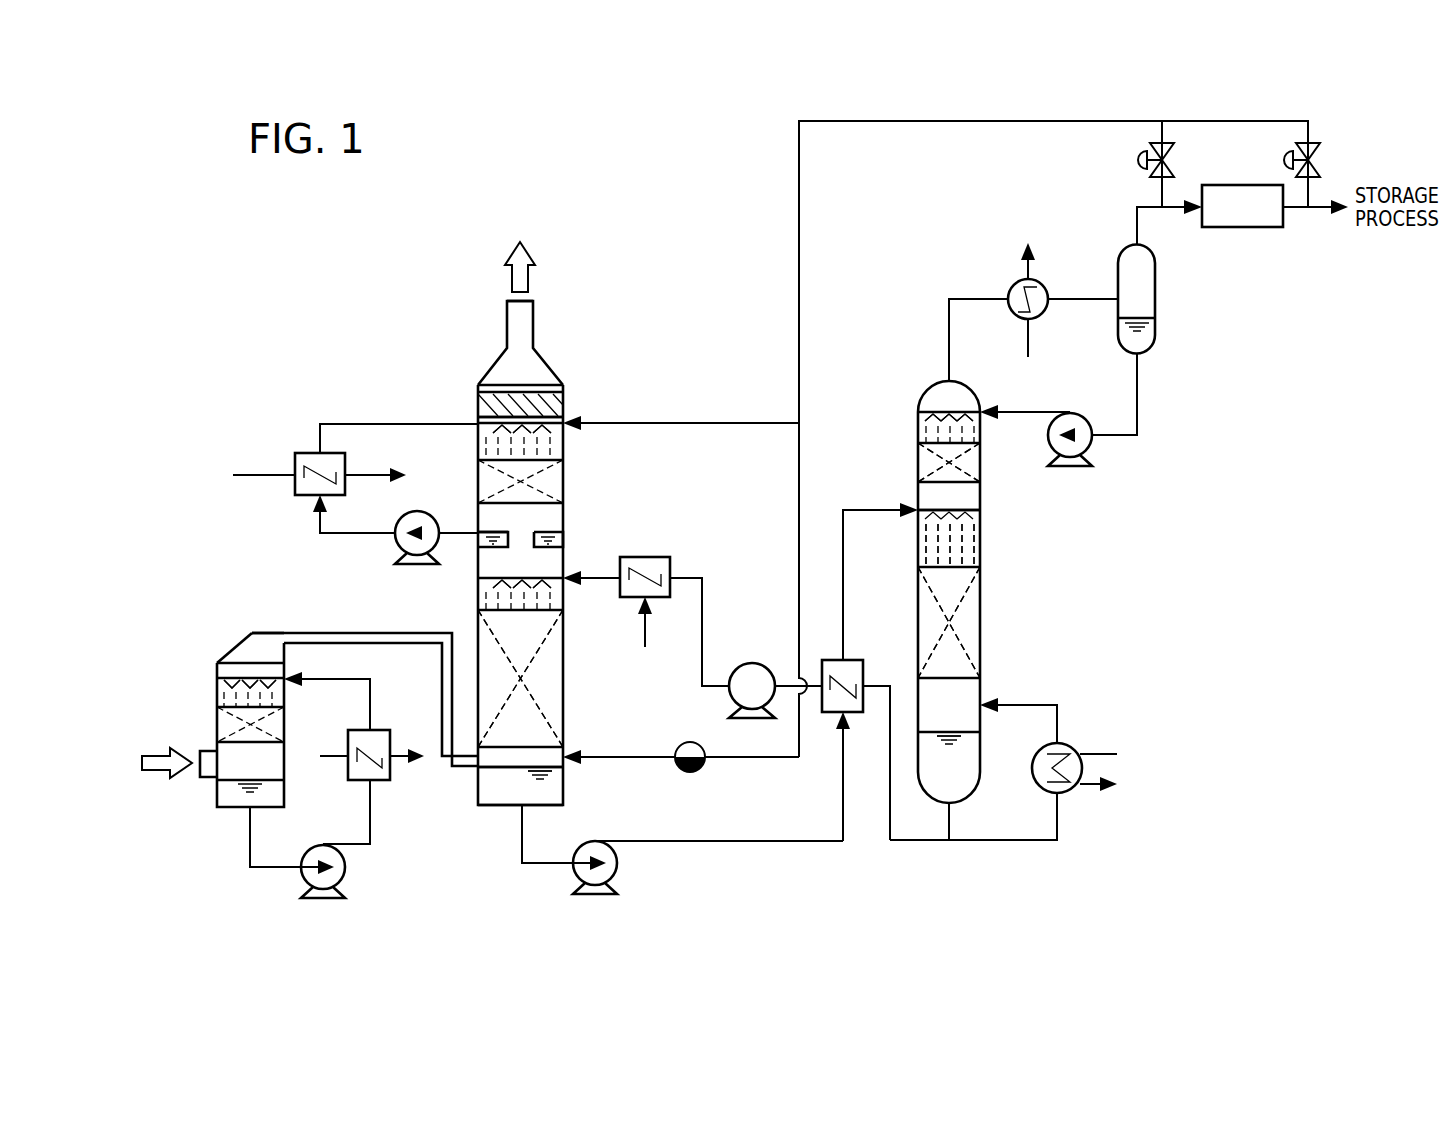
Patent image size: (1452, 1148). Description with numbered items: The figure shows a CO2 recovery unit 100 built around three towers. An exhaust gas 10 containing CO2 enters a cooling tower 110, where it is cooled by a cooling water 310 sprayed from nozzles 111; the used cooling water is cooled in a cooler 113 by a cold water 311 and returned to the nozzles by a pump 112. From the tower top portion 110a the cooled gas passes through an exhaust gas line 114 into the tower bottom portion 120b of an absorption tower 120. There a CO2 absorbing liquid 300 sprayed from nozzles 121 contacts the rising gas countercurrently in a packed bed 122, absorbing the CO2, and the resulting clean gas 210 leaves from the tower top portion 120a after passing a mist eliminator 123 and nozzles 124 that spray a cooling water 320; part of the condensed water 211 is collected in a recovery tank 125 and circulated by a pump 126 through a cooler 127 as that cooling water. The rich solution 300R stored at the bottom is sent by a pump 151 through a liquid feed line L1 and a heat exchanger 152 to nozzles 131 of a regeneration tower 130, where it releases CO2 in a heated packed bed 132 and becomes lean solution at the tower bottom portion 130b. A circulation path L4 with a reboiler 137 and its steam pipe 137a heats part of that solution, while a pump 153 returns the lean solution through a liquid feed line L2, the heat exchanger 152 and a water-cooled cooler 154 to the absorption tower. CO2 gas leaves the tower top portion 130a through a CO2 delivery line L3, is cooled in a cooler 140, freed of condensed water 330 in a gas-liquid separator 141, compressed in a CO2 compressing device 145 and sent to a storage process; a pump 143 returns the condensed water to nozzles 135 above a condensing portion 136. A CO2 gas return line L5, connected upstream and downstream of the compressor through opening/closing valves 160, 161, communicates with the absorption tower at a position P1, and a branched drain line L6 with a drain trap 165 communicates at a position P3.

The CO2 recovery unit 100 is at (408, 255).
The exhaust gas 10 is at (155, 748).
The cooling tower 110 is at (224, 625).
The tower top portion 110a is at (270, 630).
The nozzles 111 is at (230, 680).
The pump 112 is at (346, 866).
The cooler 113 is at (392, 776).
The exhaust gas line 114 is at (350, 630).
The absorption tower 120 is at (472, 338).
The tower top portion 120a is at (535, 327).
The tower bottom portion 120b is at (478, 792).
The nozzles 121 is at (565, 560).
The packed bed 122 is at (548, 668).
The mist eliminator 123 is at (565, 398).
The nozzles 124 is at (478, 420).
The recovery tank 125 is at (490, 555).
The pump 126 is at (437, 512).
The cooler 127 is at (305, 450).
The regeneration tower 130 is at (920, 372).
The tower top portion 130a is at (966, 382).
The tower bottom portion 130b is at (928, 800).
The nozzles 131 is at (982, 505).
The packed bed 132 is at (975, 625).
The nozzles 135 is at (918, 410).
The condensing portion 136 is at (918, 460).
The reboiler 137 is at (1066, 745).
The steam pipe 137a is at (1085, 770).
The cooler 140 is at (1042, 282).
The gas-liquid separator 141 is at (1157, 306).
The pump 143 is at (1095, 455).
The CO2 compressing device 145 is at (1240, 230).
The pump 151 is at (618, 863).
The heat exchanger 152 is at (850, 658).
The pump 153 is at (752, 663).
The water-cooled cooler 154 is at (672, 560).
The opening/closing valve 160 is at (1137, 160).
The opening/closing valve 161 is at (1283, 160).
The drain trap 165 is at (690, 775).
The clean gas 210 is at (535, 272).
The condensed water 211 is at (548, 530).
The CO2 absorbing liquid 300 is at (560, 598).
The rich solution 300R is at (984, 540).
The cooling water 310 is at (285, 695).
The cold water 311 is at (321, 758).
The cooling water 320 is at (563, 447).
The condensed water 330 is at (985, 432).
The liquid feed line L1 is at (745, 845).
The liquid feed line L2 is at (888, 825).
The CO2 delivery line L3 is at (1322, 212).
The circulation path L4 is at (1060, 820).
The CO2 gas return line L5 is at (937, 125).
The drain line L6 is at (745, 762).
The position P1 is at (566, 422).
The position P3 is at (565, 752).